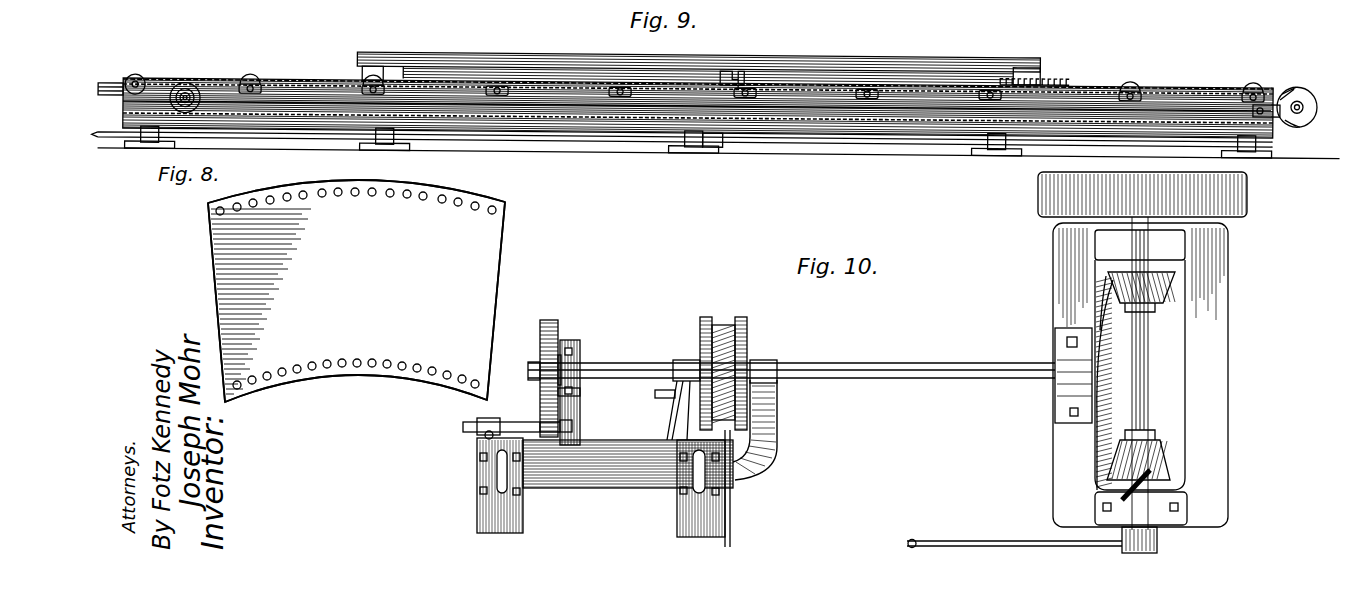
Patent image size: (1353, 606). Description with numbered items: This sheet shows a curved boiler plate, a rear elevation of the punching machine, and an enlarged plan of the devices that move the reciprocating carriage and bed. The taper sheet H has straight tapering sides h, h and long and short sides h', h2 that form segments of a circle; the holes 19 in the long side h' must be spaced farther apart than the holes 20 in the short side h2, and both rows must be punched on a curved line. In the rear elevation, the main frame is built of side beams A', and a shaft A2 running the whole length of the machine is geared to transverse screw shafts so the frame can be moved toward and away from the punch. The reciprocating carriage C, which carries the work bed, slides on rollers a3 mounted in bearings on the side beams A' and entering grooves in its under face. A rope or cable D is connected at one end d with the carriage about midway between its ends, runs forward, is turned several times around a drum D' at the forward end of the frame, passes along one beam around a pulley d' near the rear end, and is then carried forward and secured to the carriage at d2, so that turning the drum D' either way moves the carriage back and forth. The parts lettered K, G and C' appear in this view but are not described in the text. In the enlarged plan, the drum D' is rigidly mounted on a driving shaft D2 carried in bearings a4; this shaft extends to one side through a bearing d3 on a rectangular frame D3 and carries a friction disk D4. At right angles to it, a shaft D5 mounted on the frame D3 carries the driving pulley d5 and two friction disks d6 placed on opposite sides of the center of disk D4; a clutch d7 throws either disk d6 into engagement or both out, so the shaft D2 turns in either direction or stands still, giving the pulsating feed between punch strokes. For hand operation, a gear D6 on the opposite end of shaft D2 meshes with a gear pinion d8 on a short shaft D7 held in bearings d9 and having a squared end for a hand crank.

In FIG. 9, the guide bar K is at (112, 88).
In FIG. 9, the pulley d' is at (192, 81).
In FIG. 9, the side beams A' is at (311, 73).
In FIG. 10, the side beams A' is at (584, 487).
In FIG. 9, the carriage securing point d2 is at (298, 80).
In FIG. 9, the reciprocating carriage C is at (698, 51).
In FIG. 9, the guide G is at (523, 62).
In FIG. 9, the rope connection end d is at (742, 63).
In FIG. 9, the rack C' is at (1038, 70).
In FIG. 9, the rollers a3 is at (1135, 92).
In FIG. 10, the rollers a3 is at (522, 493).
In FIG. 9, the rope or cable D is at (698, 89).
In FIG. 10, the rope or cable D is at (744, 488).
In FIG. 9, the bearings a4 is at (1275, 104).
In FIG. 10, the bearings a4 is at (580, 405).
In FIG. 9, the drum D' is at (1297, 118).
In FIG. 10, the drum D' is at (723, 358).
In FIG. 9, the shaft A2 is at (612, 144).
In FIG. 8, the holes 19 is at (392, 190).
In FIG. 8, the long side h' is at (356, 183).
In FIG. 8, the straight tapering sides h is at (350, 302).
In FIG. 8, the taper sheet H is at (356, 291).
In FIG. 8, the holes 20 is at (308, 376).
In FIG. 8, the short side h2 is at (357, 378).
In FIG. 10, the gear D6 is at (552, 320).
In FIG. 10, the gear pinion d8 is at (540, 420).
In FIG. 10, the short shaft D7 is at (490, 418).
In FIG. 10, the bearings d9 is at (485, 438).
In FIG. 10, the driving shaft D2 is at (905, 383).
In FIG. 10, the bearing d3 is at (1062, 375).
In FIG. 10, the friction disk D4 is at (1098, 434).
In FIG. 10, the shaft D5 is at (1148, 392).
In FIG. 10, the friction disks d6 is at (1170, 288).
In FIG. 10, the rectangular frame D3 is at (1185, 470).
In FIG. 10, the driving pulley d5 is at (1248, 196).
In FIG. 10, the clutch d7 is at (1165, 532).